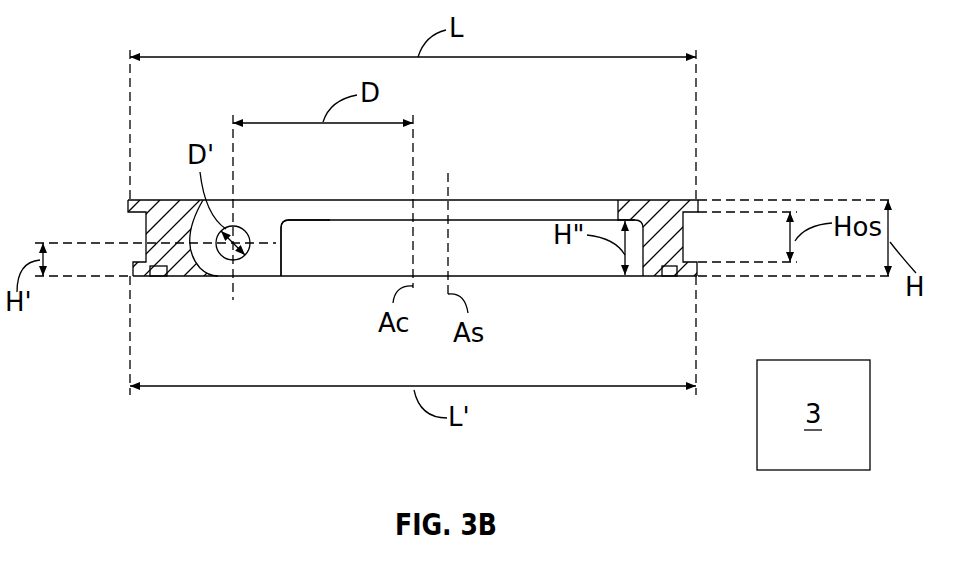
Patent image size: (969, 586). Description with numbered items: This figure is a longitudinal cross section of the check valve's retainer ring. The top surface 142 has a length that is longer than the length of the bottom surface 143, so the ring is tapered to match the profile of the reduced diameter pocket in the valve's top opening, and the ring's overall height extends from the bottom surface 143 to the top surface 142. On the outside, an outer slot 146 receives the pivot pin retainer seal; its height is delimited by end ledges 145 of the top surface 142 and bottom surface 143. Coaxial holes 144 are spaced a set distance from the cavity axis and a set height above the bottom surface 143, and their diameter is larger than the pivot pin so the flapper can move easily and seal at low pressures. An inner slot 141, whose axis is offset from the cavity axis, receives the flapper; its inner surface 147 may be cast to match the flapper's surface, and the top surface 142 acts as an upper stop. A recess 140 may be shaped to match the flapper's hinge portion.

The recess 140 is at (233, 258).
The inner slot 141 is at (524, 233).
The top surface 142 is at (648, 200).
The bottom surface 143 is at (185, 277).
The coaxial holes 144 is at (243, 258).
The end ledges 145 is at (130, 200).
The outer slot 146 is at (143, 230).
The inner surface 147 is at (306, 210).